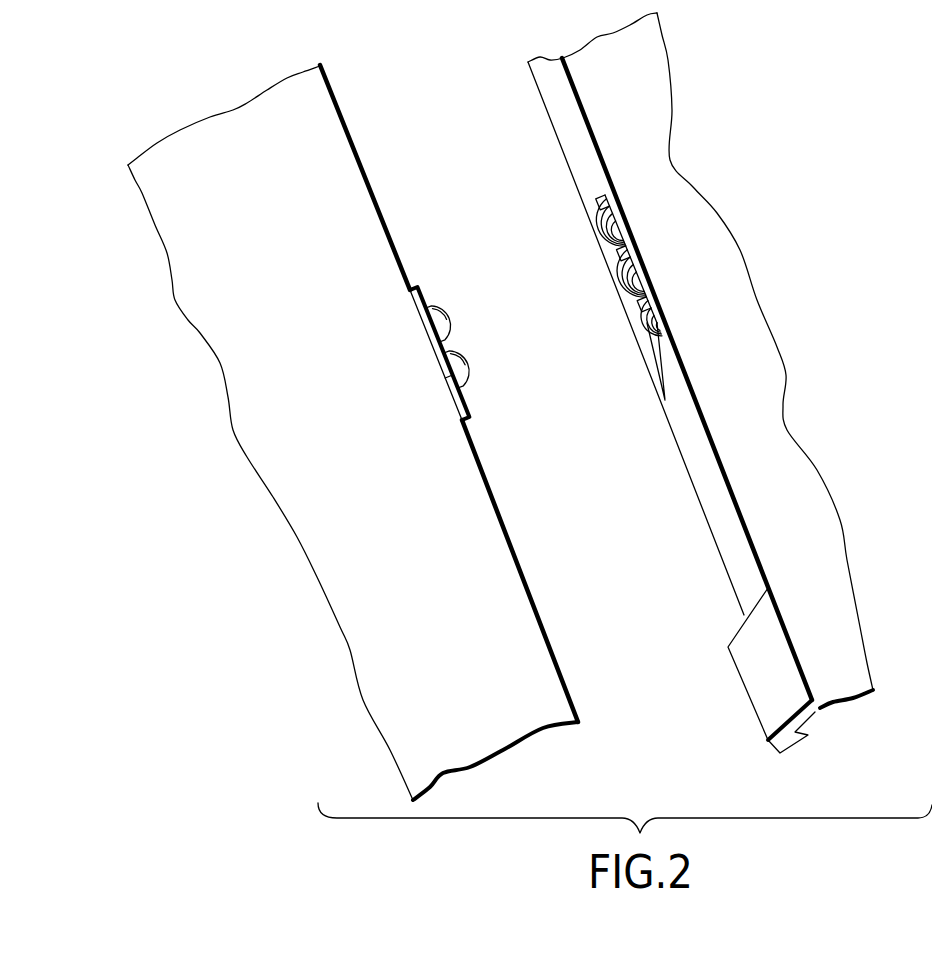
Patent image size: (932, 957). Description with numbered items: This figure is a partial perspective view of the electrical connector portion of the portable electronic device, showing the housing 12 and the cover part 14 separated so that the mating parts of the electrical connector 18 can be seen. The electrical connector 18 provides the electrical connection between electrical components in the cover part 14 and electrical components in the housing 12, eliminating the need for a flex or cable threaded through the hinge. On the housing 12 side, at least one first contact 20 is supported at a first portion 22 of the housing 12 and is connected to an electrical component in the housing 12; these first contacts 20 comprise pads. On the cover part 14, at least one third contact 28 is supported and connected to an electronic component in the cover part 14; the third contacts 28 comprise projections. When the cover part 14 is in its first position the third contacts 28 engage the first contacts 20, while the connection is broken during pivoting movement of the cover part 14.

The housing 12 is at (594, 137).
The cover part 14 is at (353, 150).
The electrical connector 18 is at (483, 383).
The first contact 20 is at (613, 282).
The first portion 22 is at (683, 387).
The third contact 28 is at (446, 310).